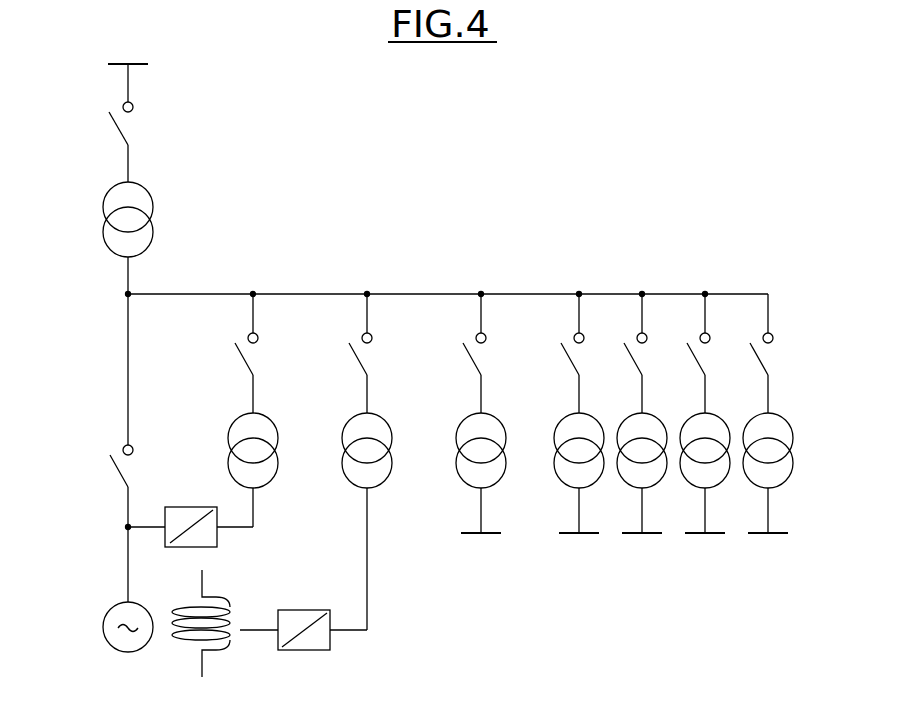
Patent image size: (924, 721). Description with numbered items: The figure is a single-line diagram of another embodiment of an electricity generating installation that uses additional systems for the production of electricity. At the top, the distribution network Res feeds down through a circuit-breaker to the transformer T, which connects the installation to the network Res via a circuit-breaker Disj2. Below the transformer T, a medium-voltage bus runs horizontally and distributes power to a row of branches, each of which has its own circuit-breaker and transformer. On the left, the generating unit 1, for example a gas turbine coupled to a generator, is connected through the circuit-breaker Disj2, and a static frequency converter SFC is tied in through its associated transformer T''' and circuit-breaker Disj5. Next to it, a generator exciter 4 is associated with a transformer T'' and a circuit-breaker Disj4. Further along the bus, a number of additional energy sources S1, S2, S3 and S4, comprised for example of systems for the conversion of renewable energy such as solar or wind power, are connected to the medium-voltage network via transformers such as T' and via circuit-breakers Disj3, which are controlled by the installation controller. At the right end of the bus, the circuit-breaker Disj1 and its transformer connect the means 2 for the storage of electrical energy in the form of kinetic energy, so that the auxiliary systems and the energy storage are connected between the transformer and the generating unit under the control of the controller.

The distribution network Res is at (128, 73).
The transformer T is at (146, 219).
The circuit-breaker Disj1 is at (761, 357).
The circuit-breaker Disj2 is at (108, 473).
The circuit-breaker Disj3 is at (463, 362).
The circuit-breaker Disj4 is at (349, 362).
The circuit-breaker Disj5 is at (234, 362).
The transformer T' is at (503, 450).
The transformer T'' is at (390, 450).
The transformer T''' is at (277, 450).
The means for the storage of electrical energy 2 is at (794, 430).
The static frequency converter SFC is at (188, 505).
The generating unit 1 is at (103, 627).
The generator exciter 4 is at (301, 610).
The additional energy source S1 is at (473, 537).
The additional energy source S2 is at (571, 537).
The additional energy source S3 is at (634, 537).
The additional energy source S4 is at (697, 537).